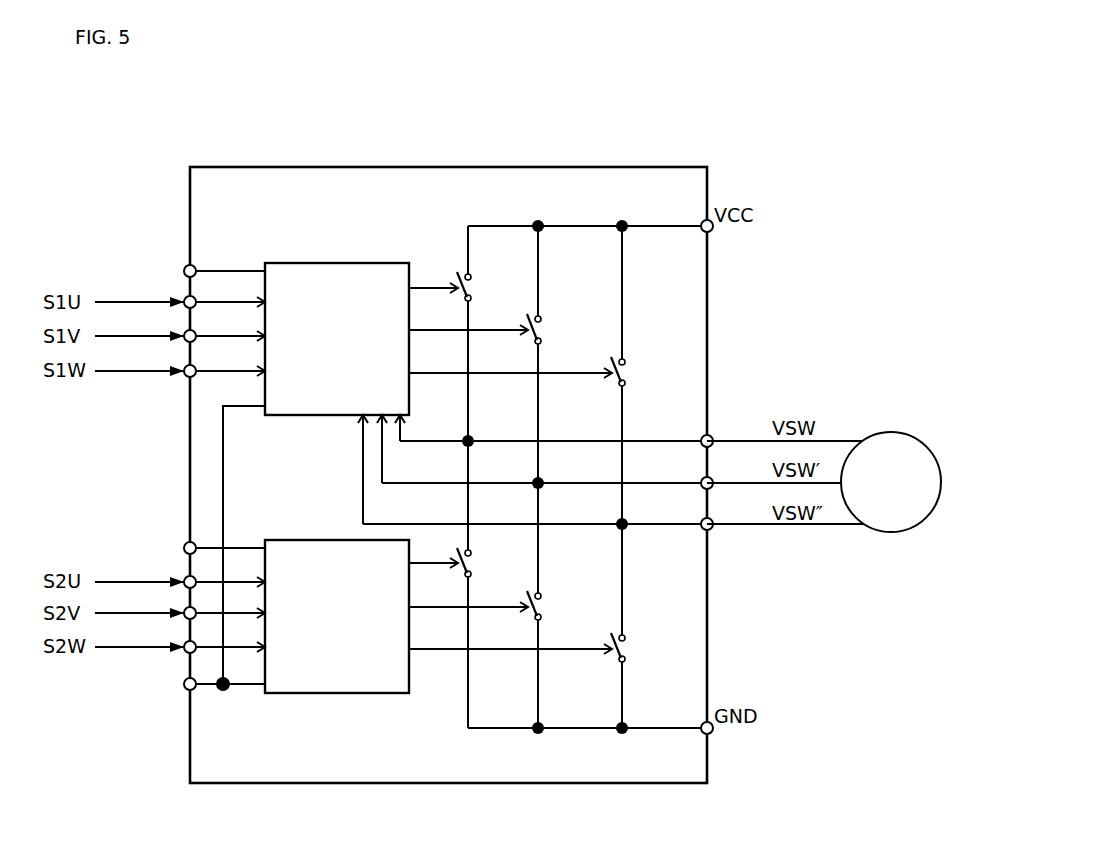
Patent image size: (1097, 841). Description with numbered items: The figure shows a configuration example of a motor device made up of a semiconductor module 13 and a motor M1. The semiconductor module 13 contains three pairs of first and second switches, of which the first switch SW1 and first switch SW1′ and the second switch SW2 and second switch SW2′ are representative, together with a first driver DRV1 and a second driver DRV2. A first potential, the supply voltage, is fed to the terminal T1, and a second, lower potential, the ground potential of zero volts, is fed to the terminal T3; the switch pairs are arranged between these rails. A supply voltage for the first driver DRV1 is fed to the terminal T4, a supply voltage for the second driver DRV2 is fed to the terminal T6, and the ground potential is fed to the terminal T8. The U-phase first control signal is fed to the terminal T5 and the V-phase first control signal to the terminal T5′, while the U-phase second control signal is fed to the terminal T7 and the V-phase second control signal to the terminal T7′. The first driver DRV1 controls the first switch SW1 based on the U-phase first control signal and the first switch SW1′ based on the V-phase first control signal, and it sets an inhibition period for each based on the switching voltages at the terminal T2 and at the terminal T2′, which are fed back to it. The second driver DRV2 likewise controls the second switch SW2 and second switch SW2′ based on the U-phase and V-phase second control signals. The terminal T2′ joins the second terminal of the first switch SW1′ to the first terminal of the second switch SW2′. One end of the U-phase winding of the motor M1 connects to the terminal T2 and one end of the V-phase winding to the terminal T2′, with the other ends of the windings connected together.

The semiconductor module 13 is at (407, 167).
The first driver DRV1 is at (336, 262).
The second driver DRV2 is at (333, 537).
The first switch SW1 is at (477, 290).
The first switch SW1′ is at (547, 332).
The second switch SW2 is at (477, 566).
The second switch SW2′ is at (547, 609).
The terminal T1 is at (713, 231).
The terminal T2 is at (713, 446).
The terminal T2′ is at (713, 488).
The terminal T3 is at (713, 733).
The terminal T4 is at (184, 276).
The terminal T5 is at (184, 309).
The terminal T5′ is at (184, 343).
The terminal T6 is at (184, 553).
The terminal T7 is at (184, 587).
The terminal T7′ is at (184, 619).
The terminal T8 is at (184, 690).
The motor M1 is at (927, 519).